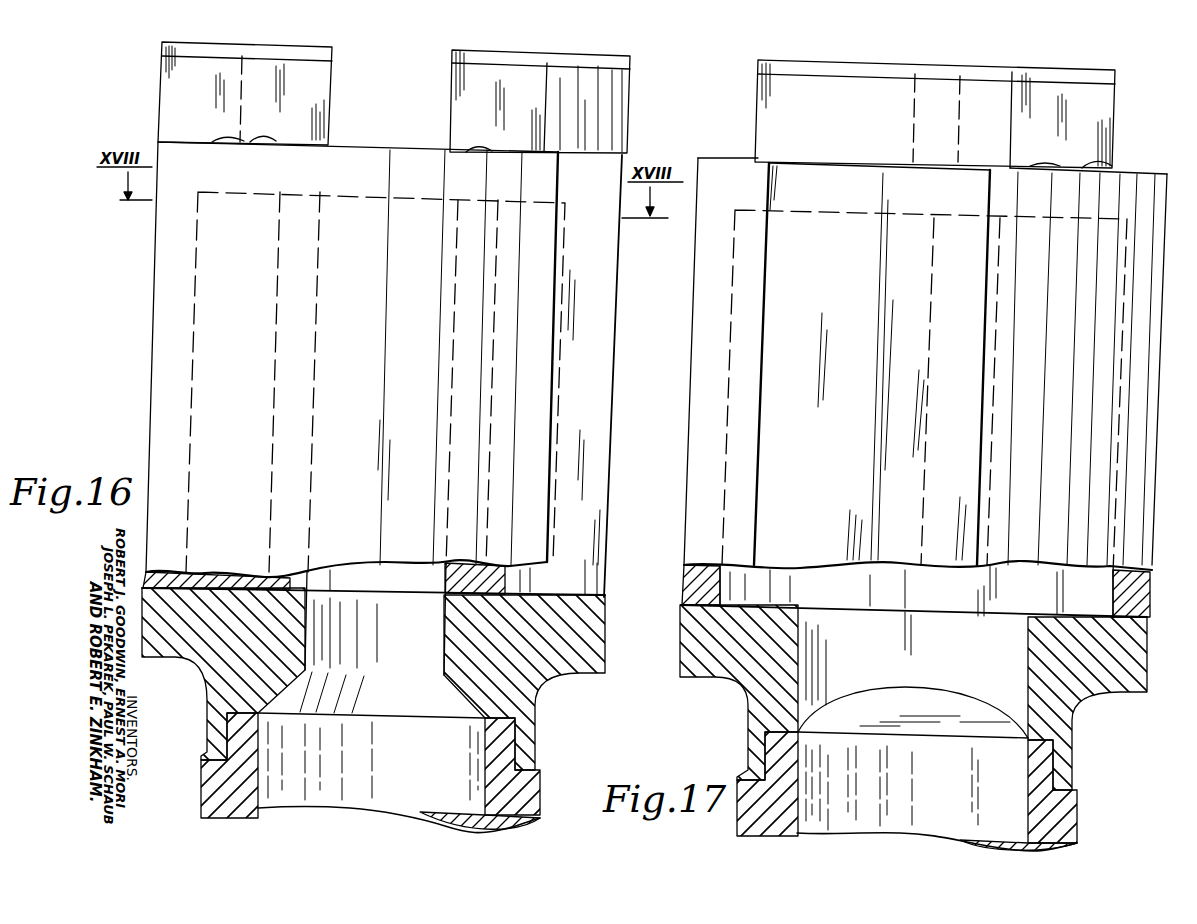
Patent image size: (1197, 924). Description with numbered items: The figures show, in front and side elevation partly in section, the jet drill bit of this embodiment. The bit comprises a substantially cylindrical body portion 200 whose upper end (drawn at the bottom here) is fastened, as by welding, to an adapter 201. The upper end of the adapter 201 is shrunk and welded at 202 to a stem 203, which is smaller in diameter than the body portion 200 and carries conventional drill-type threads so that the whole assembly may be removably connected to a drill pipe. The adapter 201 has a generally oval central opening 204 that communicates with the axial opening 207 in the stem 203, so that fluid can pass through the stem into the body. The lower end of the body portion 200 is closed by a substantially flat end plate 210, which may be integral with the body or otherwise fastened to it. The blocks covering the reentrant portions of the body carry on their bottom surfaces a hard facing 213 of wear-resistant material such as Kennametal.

In FIG. 16, the body portion 200 is at (150, 381).
In FIG. 17, the body portion 200 is at (698, 413).
In FIG. 16, the adapter 201 is at (580, 676).
In FIG. 17, the adapter 201 is at (1120, 694).
In FIG. 16, the shrunk and welded joint 202 is at (538, 755).
In FIG. 17, the shrunk and welded joint 202 is at (1075, 768).
In FIG. 16, the stem 203 is at (540, 818).
In FIG. 17, the stem 203 is at (1080, 826).
In FIG. 16, the central opening 204 is at (308, 645).
In FIG. 17, the central opening 204 is at (803, 632).
In FIG. 16, the axial opening 207 is at (260, 780).
In FIG. 17, the axial opening 207 is at (800, 771).
In FIG. 16, the end plate 210 is at (158, 150).
In FIG. 17, the end plate 210 is at (735, 140).
In FIG. 16, the hard facing 213 is at (162, 44).
In FIG. 17, the hard facing 213 is at (1115, 78).